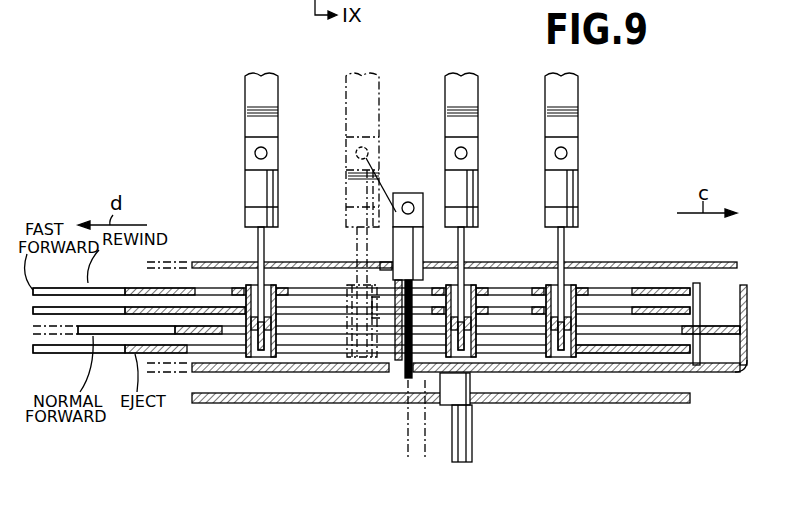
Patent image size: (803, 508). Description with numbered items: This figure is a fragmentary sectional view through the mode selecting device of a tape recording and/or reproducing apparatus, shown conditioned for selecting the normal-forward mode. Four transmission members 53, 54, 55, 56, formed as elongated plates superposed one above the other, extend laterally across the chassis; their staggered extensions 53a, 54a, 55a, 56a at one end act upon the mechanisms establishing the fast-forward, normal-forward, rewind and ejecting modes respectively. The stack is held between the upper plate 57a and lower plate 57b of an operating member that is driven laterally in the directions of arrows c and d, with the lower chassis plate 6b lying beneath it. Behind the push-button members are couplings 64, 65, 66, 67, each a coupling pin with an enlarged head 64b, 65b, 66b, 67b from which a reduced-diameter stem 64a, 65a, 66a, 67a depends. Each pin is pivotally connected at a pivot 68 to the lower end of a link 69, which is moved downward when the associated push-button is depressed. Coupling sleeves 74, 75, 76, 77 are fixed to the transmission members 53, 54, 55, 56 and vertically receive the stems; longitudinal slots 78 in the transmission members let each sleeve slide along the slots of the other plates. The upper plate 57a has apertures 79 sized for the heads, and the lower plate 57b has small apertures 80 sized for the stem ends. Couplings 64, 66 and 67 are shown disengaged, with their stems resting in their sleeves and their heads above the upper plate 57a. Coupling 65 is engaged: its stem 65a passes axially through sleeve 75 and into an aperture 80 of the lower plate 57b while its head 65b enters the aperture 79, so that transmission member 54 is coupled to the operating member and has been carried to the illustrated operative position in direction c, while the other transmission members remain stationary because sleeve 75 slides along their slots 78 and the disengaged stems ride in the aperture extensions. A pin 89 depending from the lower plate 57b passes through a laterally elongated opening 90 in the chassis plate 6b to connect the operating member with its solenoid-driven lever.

The lower plate of chassis 6b is at (506, 407).
The transmission member 53 is at (691, 310).
The extension of transmission member 53 53a is at (55, 309).
The transmission member 54 is at (747, 331).
The extension of transmission member 54 54a is at (108, 335).
The transmission member 55 is at (691, 291).
The extension of transmission member 55 55a is at (108, 290).
The transmission member 56 is at (666, 354).
The extension of transmission member 56 56a is at (52, 354).
The upper plate of operating member 57a is at (712, 262).
The lower plate of operating member 57b is at (748, 287).
The coupling 64 is at (258, 188).
The stem of coupling pin 64 64a is at (258, 242).
The head of coupling pin 64 64b is at (260, 213).
The coupling 65 is at (356, 188).
The stem of coupling pin 65 65a is at (357, 242).
The head of coupling pin 65 65b is at (360, 213).
The coupling 66 is at (472, 188).
The stem of coupling pin 66 66a is at (465, 242).
The head of coupling pin 66 66b is at (472, 213).
The coupling 67 is at (572, 188).
The stem of coupling pin 67 67a is at (565, 242).
The head of coupling pin 67 67b is at (572, 213).
The pivotal connection 68 is at (255, 153).
The link 69 is at (255, 97).
The coupling sleeve 74 is at (243, 337).
The coupling sleeve 75 is at (380, 358).
The coupling sleeve 76 is at (478, 335).
The coupling sleeve 77 is at (583, 320).
The longitudinal slot 78 is at (302, 312).
The aperture in upper plate 79 is at (390, 264).
The aperture in lower plate 80 is at (310, 373).
The pin 89 is at (460, 431).
The laterally elongated opening 90 is at (410, 442).